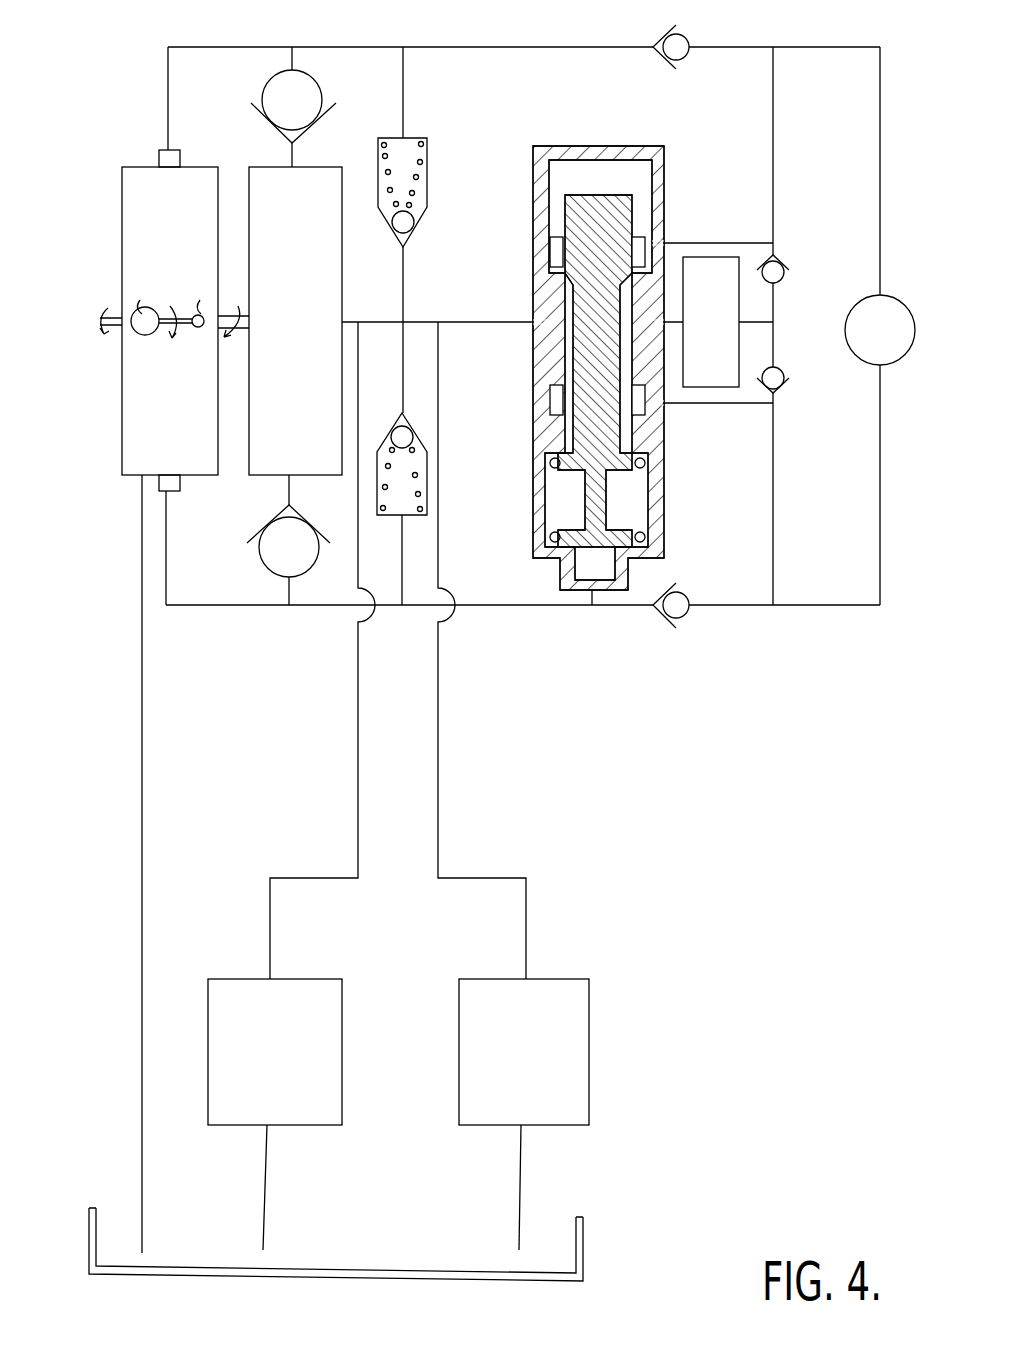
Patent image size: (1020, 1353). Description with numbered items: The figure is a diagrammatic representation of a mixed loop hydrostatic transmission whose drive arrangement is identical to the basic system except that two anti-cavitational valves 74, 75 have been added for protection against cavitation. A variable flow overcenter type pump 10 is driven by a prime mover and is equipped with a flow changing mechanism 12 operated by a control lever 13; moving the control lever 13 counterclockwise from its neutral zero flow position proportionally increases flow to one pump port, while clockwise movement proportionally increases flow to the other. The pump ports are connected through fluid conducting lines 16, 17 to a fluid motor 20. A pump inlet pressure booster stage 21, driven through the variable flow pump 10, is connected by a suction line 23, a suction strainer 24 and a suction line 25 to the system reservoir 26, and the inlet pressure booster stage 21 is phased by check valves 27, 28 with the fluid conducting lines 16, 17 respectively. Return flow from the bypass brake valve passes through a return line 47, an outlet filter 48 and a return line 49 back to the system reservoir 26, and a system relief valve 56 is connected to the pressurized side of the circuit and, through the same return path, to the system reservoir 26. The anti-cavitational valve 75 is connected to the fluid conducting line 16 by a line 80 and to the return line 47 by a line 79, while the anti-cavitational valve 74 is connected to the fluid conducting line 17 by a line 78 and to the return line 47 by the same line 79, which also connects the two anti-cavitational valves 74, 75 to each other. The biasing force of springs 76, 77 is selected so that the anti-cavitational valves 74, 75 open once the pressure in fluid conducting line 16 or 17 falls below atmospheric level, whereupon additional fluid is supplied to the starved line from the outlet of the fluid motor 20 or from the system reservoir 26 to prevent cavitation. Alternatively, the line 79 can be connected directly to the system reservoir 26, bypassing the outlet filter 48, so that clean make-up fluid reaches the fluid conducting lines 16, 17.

The variable flow overcenter type pump 10 is at (172, 240).
The flow changing mechanism 12 is at (149, 303).
The control lever 13 is at (187, 297).
The fluid conducting line 16 is at (448, 45).
The fluid conducting line 17 is at (510, 608).
The fluid motor 20 is at (890, 344).
The pump inlet pressure booster stage 21 is at (298, 322).
The suction line 23 is at (359, 778).
The suction strainer 24 is at (272, 1064).
The suction line 25 is at (266, 1190).
The system reservoir 26 is at (584, 1240).
The check valve 27 is at (305, 95).
The check valve 28 is at (296, 535).
The return line 47 is at (439, 722).
The outlet filter 48 is at (528, 1064).
The return line 49 is at (522, 1186).
The system relief valve 56 is at (716, 332).
The anti-cavitational valve 74 is at (412, 518).
The anti-cavitational valve 75 is at (412, 226).
The spring 76 is at (390, 445).
The spring 77 is at (418, 178).
The line 78 is at (400, 562).
The line 79 is at (404, 300).
The line 80 is at (404, 100).